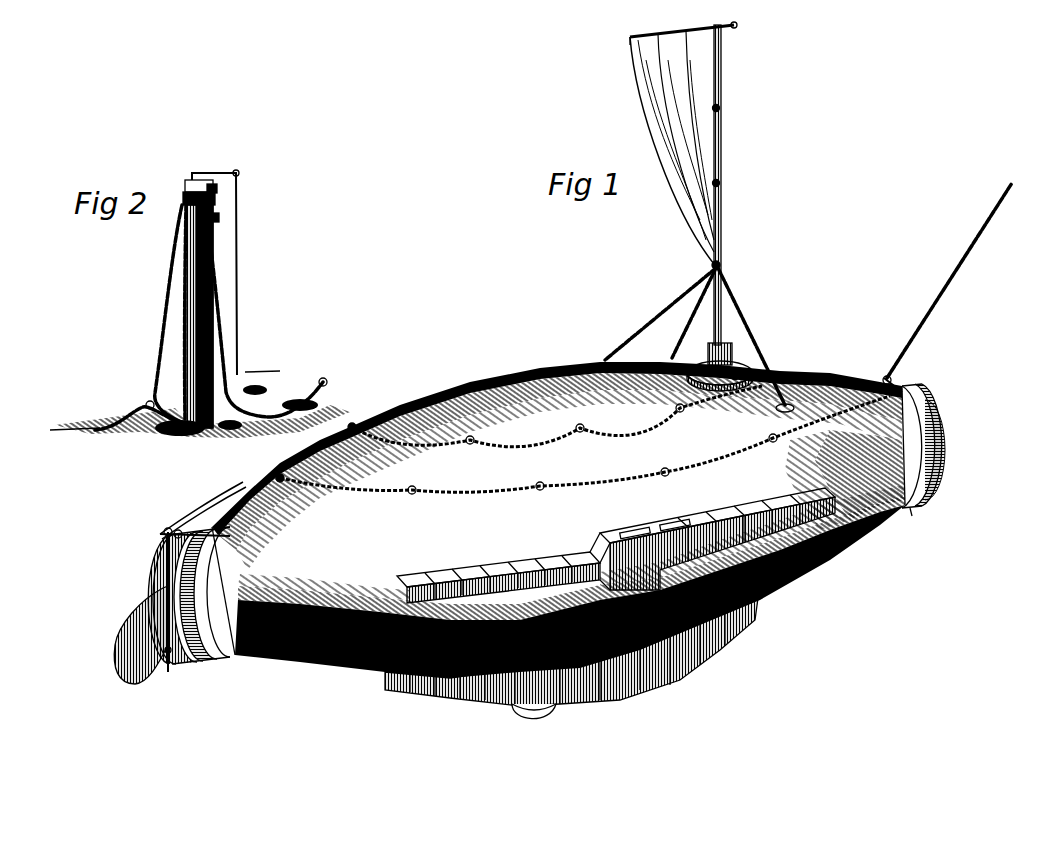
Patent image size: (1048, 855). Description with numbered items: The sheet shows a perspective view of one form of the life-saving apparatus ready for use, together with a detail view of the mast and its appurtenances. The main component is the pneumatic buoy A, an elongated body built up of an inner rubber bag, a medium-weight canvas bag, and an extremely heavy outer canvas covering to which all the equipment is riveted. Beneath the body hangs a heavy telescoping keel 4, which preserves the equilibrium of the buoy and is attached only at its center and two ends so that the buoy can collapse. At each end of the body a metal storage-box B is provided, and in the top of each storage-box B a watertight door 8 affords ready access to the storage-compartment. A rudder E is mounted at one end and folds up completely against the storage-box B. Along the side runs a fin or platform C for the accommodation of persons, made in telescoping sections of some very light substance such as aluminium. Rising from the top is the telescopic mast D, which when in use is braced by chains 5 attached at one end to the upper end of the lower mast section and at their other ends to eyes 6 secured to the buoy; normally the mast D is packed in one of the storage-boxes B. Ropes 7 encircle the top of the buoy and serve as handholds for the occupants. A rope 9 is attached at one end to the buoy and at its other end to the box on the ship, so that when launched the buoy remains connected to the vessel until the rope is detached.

In FIG. 1, the buoy A is at (493, 378).
In FIG. 1, the storage-boxes B is at (152, 567).
In FIG. 1, the fins or platforms C is at (568, 543).
In FIG. 1, the telescopic mast D is at (733, 292).
In FIG. 2, the telescopic mast D is at (204, 250).
In FIG. 1, the rudder E is at (143, 615).
In FIG. 1, the telescoping keel 4 is at (571, 654).
In FIG. 1, the chains 5 is at (680, 318).
In FIG. 2, the chains 5 is at (158, 342).
In FIG. 1, the eyes 6 is at (596, 366).
In FIG. 1, the ropes 7 is at (528, 453).
In FIG. 1, the watertight doors 8 is at (190, 522).
In FIG. 1, the rope 9 is at (932, 302).